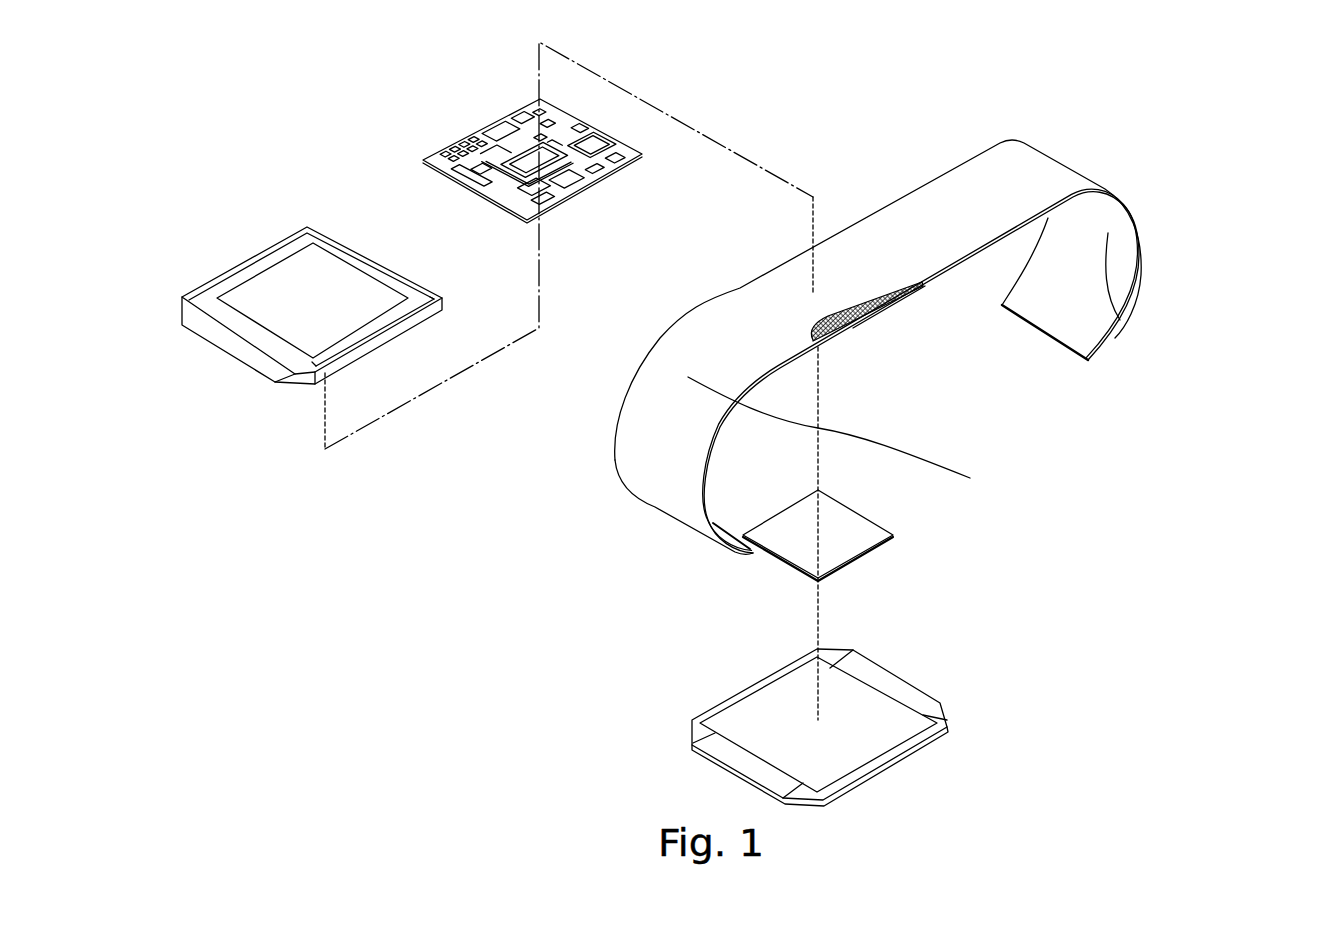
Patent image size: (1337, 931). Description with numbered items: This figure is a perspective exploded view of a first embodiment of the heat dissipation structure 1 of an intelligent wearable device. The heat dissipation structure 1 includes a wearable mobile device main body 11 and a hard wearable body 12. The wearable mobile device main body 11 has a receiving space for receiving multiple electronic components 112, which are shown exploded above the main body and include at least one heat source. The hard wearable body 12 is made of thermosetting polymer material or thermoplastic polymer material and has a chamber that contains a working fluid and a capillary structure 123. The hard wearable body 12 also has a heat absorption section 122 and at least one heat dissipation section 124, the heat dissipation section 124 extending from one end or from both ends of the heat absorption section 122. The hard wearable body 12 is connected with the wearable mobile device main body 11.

The heat dissipation structure of intelligent wearable device 1 is at (1258, 130).
The wearable mobile device main body 11 is at (900, 692).
The electronic components 112 is at (363, 257).
The hard wearable body 12 is at (1185, 380).
The heat absorption section 122 is at (868, 275).
The capillary structure 123 is at (853, 328).
The heat dissipation section 124 is at (1117, 320).